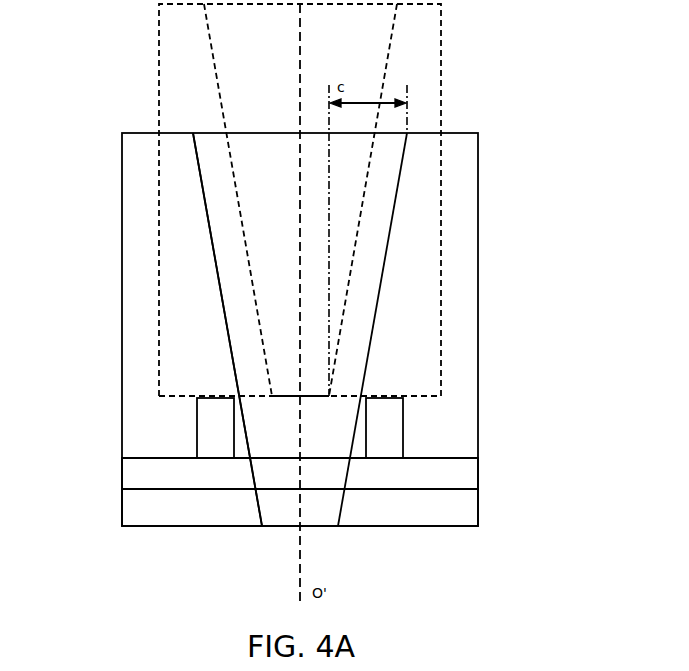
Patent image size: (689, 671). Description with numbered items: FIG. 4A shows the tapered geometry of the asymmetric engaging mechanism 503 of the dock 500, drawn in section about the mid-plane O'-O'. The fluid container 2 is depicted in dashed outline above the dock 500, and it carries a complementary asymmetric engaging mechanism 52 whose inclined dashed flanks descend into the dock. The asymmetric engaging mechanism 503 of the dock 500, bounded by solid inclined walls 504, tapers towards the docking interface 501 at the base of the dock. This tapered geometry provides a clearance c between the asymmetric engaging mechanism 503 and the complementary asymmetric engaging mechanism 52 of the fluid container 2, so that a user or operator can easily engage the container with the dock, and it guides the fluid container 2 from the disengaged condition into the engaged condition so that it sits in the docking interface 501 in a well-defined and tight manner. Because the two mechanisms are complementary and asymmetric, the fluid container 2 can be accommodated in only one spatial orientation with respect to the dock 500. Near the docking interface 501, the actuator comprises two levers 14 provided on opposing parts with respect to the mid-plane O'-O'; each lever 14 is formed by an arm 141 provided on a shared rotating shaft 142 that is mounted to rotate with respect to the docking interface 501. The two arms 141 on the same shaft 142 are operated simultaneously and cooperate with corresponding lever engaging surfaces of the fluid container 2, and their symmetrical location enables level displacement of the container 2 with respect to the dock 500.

The fluid container 2 is at (441, 108).
The complementary asymmetric engaging mechanism 52 is at (388, 56).
The dock 500 is at (122, 208).
The docking interface 501 is at (378, 526).
The asymmetric engaging mechanism 503 is at (186, 269).
The cavity sidewall 504 is at (228, 332).
The lever 14 is at (162, 445).
The arm 141 is at (392, 432).
The shaft 142 is at (472, 474).